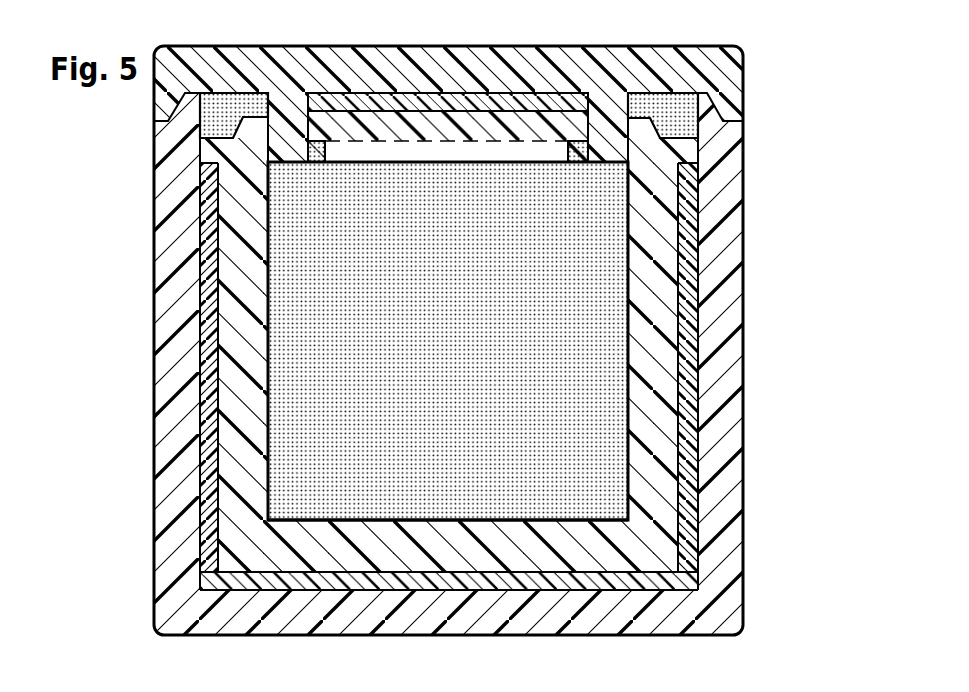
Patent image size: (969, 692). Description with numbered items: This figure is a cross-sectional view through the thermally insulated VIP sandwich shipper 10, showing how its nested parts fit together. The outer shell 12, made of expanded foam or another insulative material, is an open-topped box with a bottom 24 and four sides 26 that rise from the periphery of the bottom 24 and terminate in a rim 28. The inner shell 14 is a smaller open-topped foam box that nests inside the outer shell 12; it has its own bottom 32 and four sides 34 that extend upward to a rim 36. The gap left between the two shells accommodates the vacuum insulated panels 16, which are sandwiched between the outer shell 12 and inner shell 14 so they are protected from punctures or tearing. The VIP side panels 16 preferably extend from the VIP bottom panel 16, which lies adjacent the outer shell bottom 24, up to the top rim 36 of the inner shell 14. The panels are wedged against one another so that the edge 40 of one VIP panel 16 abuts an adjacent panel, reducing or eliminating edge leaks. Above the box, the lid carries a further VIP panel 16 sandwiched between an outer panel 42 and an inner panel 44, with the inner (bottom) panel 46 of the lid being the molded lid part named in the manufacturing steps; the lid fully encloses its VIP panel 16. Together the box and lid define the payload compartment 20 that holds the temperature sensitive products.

The thermally insulated VIP sandwich shipper 10 is at (790, 64).
The outer shell 12 is at (722, 165).
The inner shell 14 is at (655, 220).
The vacuum insulated panel 16 is at (214, 345).
The payload compartment 20 is at (562, 313).
The outer shell bottom 24 is at (440, 585).
The outer shell sides 26 is at (204, 415).
The outer shell rim 28 is at (165, 118).
The inner shell bottom 32 is at (590, 514).
The inner shell sides 34 is at (285, 290).
The inner shell rim 36 is at (690, 140).
The edge of VIP panel 40 is at (200, 583).
The outer panel of lid 42 is at (553, 95).
The inner panel of lid 44 is at (462, 170).
The inner (bottom) panel of lid 46 is at (203, 168).